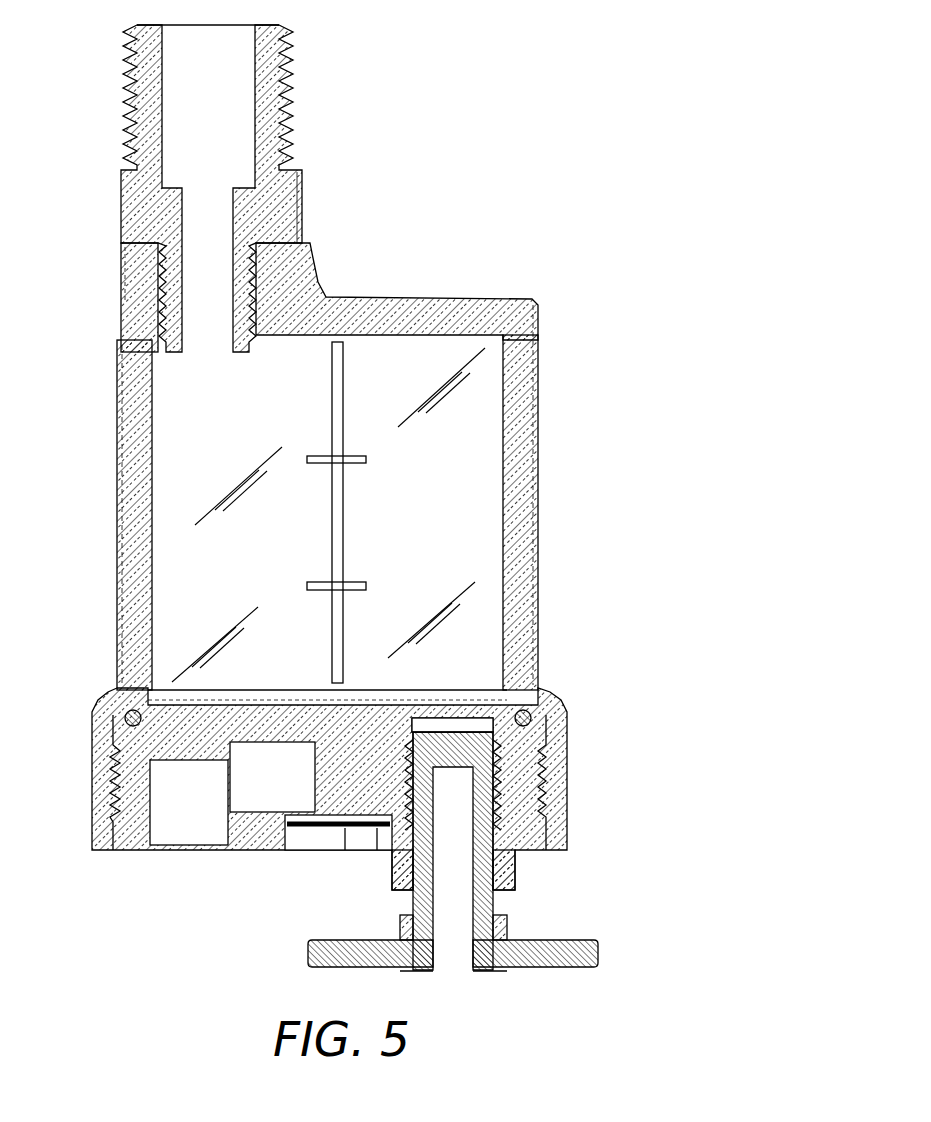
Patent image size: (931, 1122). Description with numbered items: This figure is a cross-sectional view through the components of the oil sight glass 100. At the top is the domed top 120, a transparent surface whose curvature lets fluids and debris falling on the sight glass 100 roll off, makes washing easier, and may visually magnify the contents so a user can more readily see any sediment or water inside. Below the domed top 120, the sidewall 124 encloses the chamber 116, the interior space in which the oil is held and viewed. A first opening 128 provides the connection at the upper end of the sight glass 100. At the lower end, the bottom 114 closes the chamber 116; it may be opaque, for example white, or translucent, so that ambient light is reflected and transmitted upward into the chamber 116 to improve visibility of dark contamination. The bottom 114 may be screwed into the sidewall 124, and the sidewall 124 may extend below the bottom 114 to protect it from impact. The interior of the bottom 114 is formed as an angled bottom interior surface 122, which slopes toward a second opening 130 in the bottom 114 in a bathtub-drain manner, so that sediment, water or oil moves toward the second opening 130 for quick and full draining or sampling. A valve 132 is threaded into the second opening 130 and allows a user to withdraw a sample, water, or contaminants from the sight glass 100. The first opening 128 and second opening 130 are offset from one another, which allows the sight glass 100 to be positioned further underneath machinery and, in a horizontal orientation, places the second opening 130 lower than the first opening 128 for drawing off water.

The oil sight glass 100 is at (463, 147).
The opaque bottom 114 is at (348, 800).
The chamber 116 is at (174, 497).
The domed top 120 is at (378, 300).
The angled bottom interior surface 122 is at (392, 716).
The sidewall 124 is at (522, 418).
The first opening 128 is at (157, 340).
The second opening 130 is at (485, 710).
The valve 132 is at (483, 968).